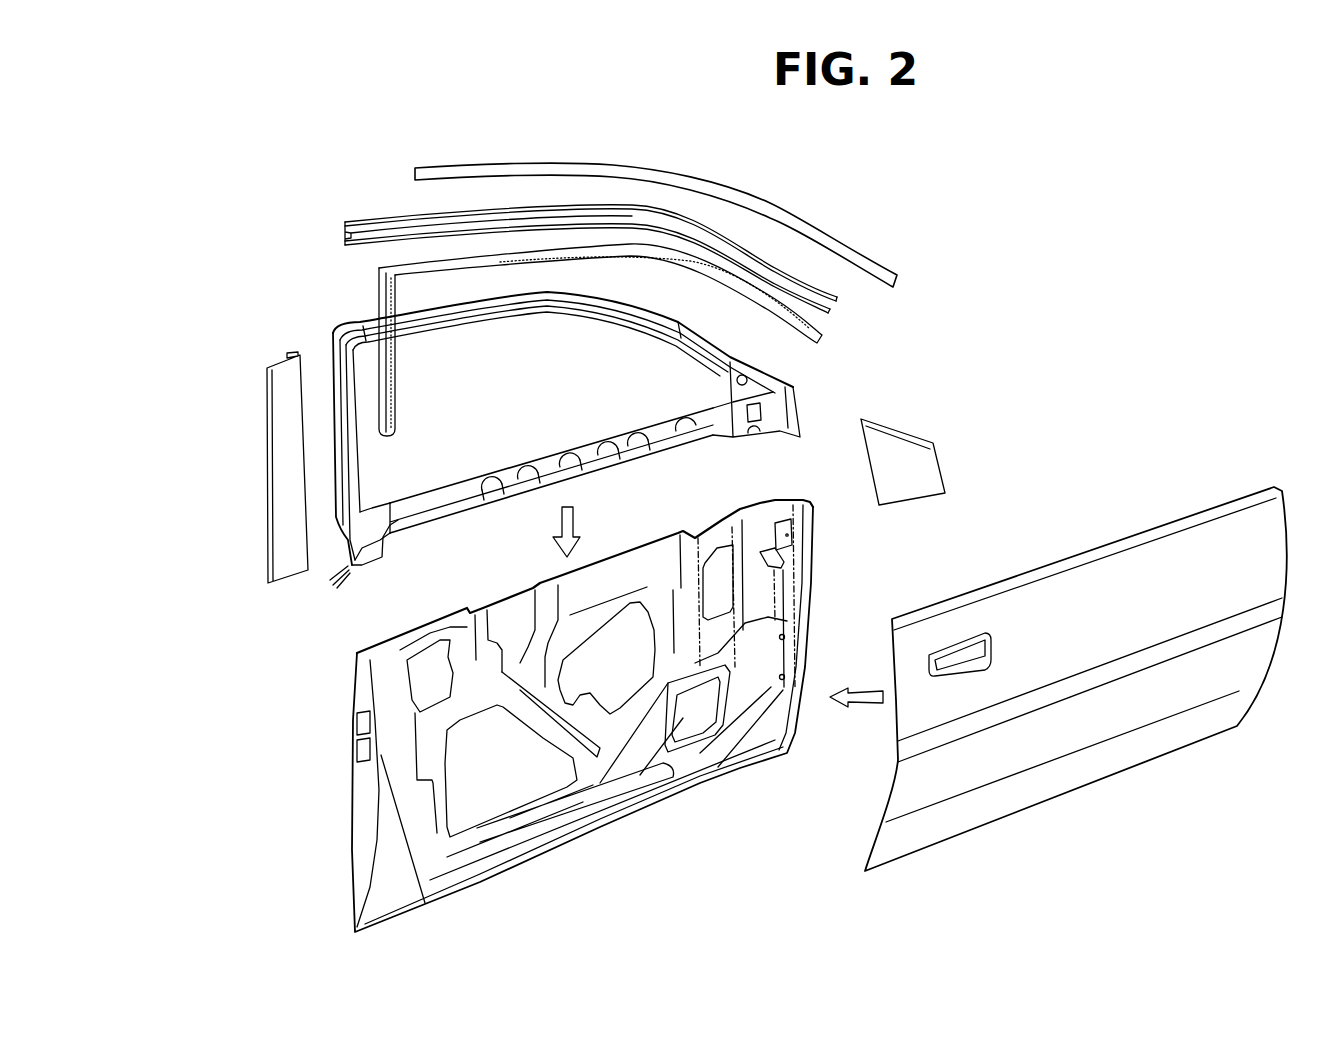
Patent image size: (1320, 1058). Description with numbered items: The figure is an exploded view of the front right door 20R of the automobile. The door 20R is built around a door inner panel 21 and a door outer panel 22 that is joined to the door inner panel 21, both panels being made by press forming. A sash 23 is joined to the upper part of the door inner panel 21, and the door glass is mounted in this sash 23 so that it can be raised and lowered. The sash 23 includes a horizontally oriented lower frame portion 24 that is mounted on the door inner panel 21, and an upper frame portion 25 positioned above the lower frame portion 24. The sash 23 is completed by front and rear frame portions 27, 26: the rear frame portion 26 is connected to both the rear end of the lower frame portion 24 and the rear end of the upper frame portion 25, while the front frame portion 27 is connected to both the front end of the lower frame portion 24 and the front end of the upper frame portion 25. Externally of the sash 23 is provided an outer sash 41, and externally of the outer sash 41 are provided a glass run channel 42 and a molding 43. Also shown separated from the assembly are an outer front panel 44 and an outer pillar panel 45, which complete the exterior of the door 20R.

The door 20R is at (988, 232).
The door inner panel 21 is at (407, 792).
The door outer panel 22 is at (1071, 784).
The sash 23 is at (352, 570).
The lower frame portion 24 is at (633, 453).
The upper frame portion 25 is at (527, 310).
The rear frame portion 26 is at (357, 475).
The front frame portion 27 is at (783, 407).
The outer sash 41 is at (388, 215).
The glass run channel 42 is at (512, 257).
The molding 43 is at (620, 167).
The outer front panel 44 is at (929, 462).
The outer pillar panel 45 is at (277, 503).